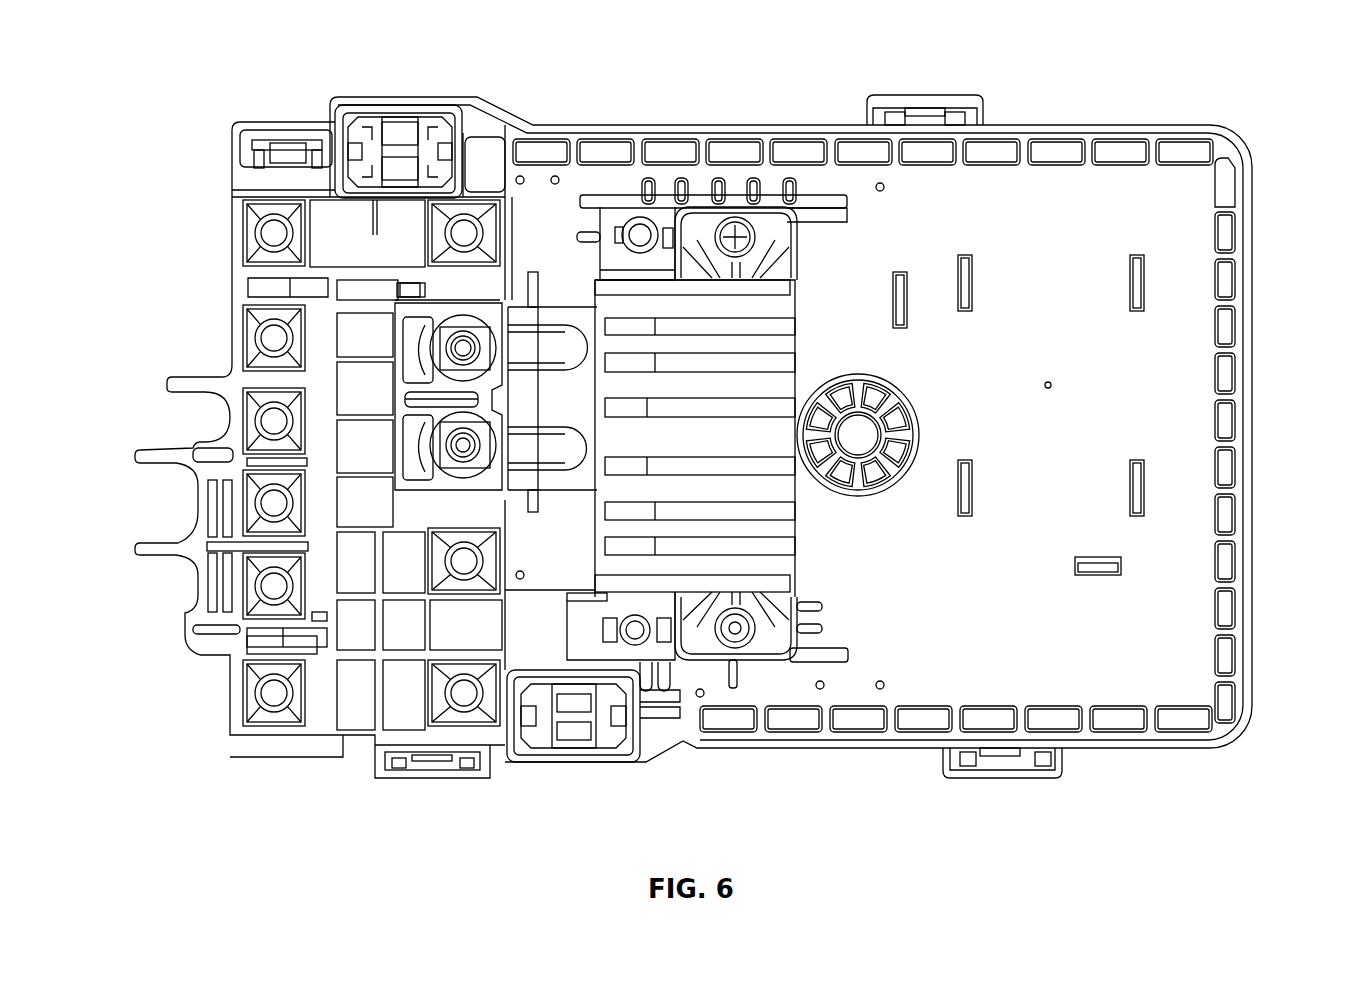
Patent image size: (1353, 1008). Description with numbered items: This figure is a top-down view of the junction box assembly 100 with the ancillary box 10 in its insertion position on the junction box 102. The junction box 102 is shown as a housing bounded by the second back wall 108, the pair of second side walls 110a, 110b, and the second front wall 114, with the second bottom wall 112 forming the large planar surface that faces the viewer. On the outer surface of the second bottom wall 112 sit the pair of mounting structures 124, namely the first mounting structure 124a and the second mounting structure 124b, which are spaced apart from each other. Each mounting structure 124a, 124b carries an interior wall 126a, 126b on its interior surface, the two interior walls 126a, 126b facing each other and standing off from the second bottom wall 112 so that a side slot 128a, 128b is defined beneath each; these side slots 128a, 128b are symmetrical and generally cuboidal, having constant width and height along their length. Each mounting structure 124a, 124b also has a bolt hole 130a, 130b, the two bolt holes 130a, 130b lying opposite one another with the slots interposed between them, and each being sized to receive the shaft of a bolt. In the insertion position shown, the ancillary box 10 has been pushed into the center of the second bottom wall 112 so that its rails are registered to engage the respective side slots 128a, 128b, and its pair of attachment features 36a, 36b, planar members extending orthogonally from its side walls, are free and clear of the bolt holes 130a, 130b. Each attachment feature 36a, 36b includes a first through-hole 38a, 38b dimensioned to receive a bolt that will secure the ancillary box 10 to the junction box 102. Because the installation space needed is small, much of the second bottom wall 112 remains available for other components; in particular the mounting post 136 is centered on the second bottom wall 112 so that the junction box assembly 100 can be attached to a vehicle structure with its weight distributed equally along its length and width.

The junction box assembly 100 is at (1238, 50).
The junction box 102 is at (1032, 78).
The second back wall 108 is at (205, 678).
The second side wall 110a is at (1162, 118).
The second side wall 110b is at (1140, 772).
The second bottom wall 112 is at (1190, 246).
The second front wall 114 is at (1262, 600).
The ancillary box 10 is at (800, 295).
The pair of mounting structures 124 is at (496, 392).
The mounting structure 124a is at (632, 222).
The mounting structure 124b is at (594, 690).
The interior wall 126a is at (652, 270).
The interior wall 126b is at (582, 600).
The side slot 128a is at (597, 258).
The side slot 128b is at (572, 597).
The bolt hole 130a is at (638, 217).
The bolt hole 130b is at (640, 644).
The mounting post 136 is at (905, 400).
The attachment feature 36a is at (765, 215).
The attachment feature 36b is at (766, 662).
The first through-hole 38a is at (737, 218).
The first through-hole 38b is at (736, 648).